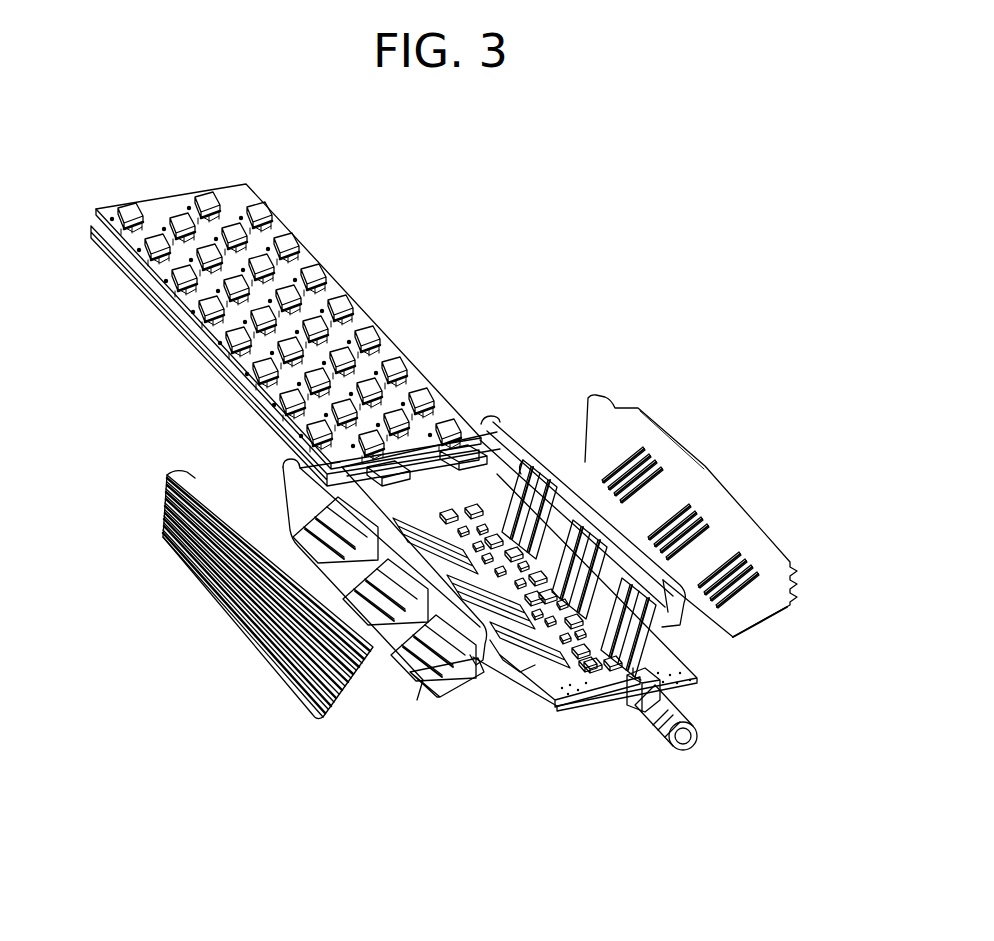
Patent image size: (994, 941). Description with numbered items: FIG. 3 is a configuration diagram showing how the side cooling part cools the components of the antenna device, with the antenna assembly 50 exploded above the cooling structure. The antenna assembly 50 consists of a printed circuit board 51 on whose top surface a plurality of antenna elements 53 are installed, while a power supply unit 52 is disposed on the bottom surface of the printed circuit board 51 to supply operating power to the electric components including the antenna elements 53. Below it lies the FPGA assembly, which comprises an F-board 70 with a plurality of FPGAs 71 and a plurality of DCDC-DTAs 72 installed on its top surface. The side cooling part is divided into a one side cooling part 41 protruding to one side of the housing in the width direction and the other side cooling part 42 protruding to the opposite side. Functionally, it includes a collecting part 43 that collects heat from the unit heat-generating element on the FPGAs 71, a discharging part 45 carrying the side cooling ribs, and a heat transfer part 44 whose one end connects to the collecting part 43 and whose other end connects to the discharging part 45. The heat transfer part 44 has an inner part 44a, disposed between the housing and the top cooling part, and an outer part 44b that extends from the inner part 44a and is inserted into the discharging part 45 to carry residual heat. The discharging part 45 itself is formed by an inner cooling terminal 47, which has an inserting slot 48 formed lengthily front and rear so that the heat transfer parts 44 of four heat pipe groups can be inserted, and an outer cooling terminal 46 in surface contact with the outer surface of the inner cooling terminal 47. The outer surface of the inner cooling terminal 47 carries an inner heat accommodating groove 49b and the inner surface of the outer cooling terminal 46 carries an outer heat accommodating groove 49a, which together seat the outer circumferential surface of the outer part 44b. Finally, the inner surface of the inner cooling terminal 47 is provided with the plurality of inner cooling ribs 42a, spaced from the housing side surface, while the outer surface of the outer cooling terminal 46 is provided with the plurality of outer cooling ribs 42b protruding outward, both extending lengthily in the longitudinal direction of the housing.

The one side cooling part 41 is at (128, 632).
The other side cooling part 42 is at (795, 677).
The inner cooling ribs 42a is at (510, 428).
The outer cooling ribs 42b is at (790, 563).
The collecting part 43 is at (558, 707).
The heat transfer part 44 is at (506, 657).
The inner part 44a is at (503, 660).
The outer part 44b is at (420, 653).
The discharging part 45 is at (687, 627).
The outer cooling terminal 46 is at (190, 588).
The inner cooling terminal 47 is at (298, 494).
The inserting slot 48 is at (670, 637).
The outer heat accommodating groove 49a is at (683, 507).
The inner heat accommodating groove 49b is at (428, 650).
The antenna assembly 50 is at (140, 381).
The printed circuit board 51 is at (130, 242).
The power supply unit 52 is at (147, 270).
The antenna elements 53 is at (213, 303).
The F-board 70 is at (680, 677).
The FPGAs 71 is at (553, 693).
The DCDC-DTAs 72 is at (613, 672).